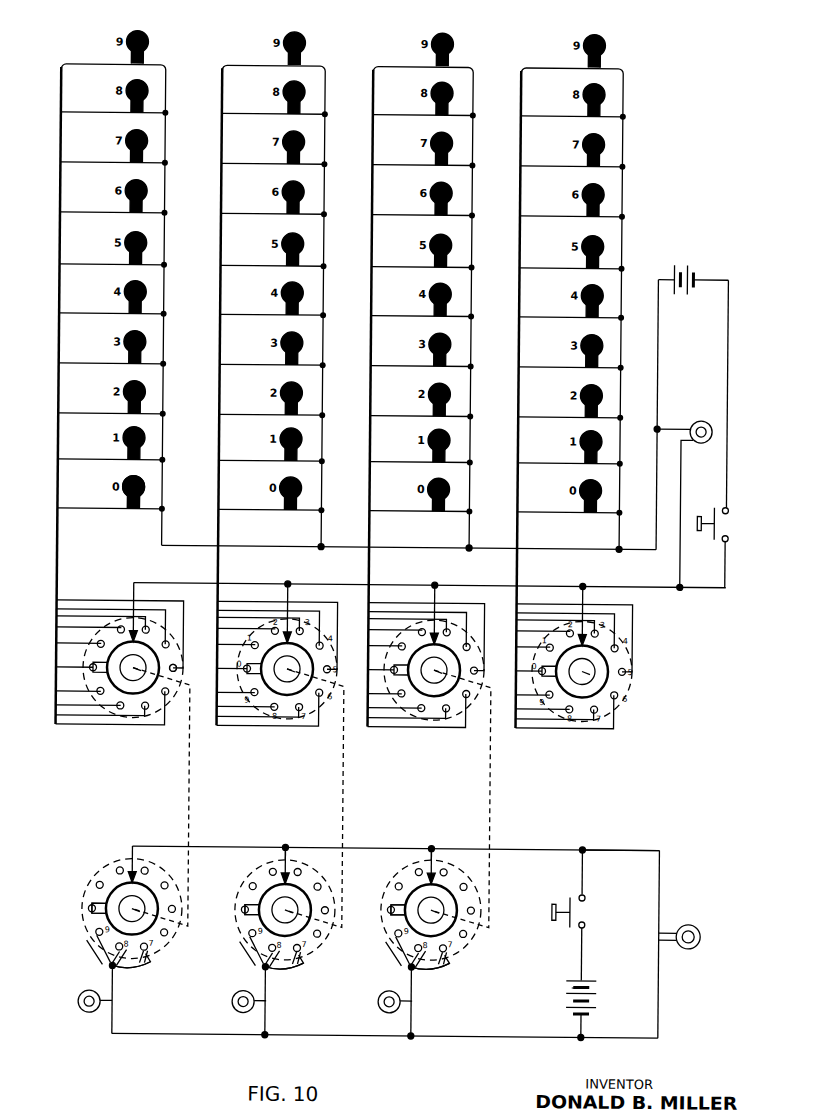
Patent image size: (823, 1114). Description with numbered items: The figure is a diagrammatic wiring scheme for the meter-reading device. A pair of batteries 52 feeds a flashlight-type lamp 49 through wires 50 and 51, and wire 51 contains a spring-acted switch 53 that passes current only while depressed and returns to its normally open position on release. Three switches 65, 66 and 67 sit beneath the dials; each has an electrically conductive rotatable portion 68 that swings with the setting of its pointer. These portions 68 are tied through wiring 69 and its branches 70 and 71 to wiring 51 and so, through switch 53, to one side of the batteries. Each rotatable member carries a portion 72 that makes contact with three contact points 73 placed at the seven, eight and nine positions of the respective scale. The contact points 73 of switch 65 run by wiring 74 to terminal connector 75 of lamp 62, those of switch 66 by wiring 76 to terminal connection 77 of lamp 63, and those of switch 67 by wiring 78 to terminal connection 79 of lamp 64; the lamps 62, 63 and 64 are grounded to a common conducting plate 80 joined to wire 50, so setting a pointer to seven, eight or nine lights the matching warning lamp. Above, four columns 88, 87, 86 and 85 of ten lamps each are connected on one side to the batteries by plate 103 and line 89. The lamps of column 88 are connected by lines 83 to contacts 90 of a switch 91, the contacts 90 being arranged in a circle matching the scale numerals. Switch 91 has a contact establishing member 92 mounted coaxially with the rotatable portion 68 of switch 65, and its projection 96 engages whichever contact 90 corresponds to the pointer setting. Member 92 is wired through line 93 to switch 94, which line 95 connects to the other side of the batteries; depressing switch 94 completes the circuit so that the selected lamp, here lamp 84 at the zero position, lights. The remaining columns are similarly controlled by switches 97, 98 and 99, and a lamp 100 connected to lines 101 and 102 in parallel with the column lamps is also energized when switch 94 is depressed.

The lamp 49 is at (703, 938).
The wire 50 is at (663, 982).
The wire 51 is at (628, 848).
The batteries 52 is at (682, 263).
The switch 53 is at (560, 908).
The lamp 62 is at (88, 1014).
The lamp 63 is at (242, 1013).
The lamp 64 is at (391, 1013).
The switch 65 is at (103, 897).
The switch 66 is at (291, 907).
The switch 67 is at (439, 907).
The rotatable portion 68 is at (116, 883).
The wiring 69 is at (386, 848).
The branch 70 is at (283, 848).
The branch 71 is at (436, 848).
The portion 72 is at (96, 911).
The contact points 73 is at (150, 964).
The wiring 74 is at (105, 964).
The terminal connector 75 is at (116, 985).
The wiring 76 is at (256, 964).
The terminal connection 77 is at (269, 987).
The wiring 78 is at (402, 963).
The terminal connection 79 is at (415, 987).
The electrical conducting plate 80 is at (363, 1037).
The lines 83 is at (56, 351).
The lamp 84 is at (133, 511).
The column 85 is at (571, 371).
The column 86 is at (422, 370).
The column 87 is at (273, 368).
The column 88 is at (92, 367).
The line 89 is at (655, 480).
The contacts 90 is at (103, 662).
The switch 91 is at (150, 667).
The contact establishing member 92 is at (193, 659).
The line 93 is at (247, 585).
The switch 94 is at (720, 543).
The line 95 is at (728, 406).
The projection 96 is at (119, 754).
The control switch 97 is at (280, 755).
The control switch 98 is at (429, 756).
The control switch 99 is at (594, 657).
The lamp 100 is at (700, 418).
The line 101 is at (684, 425).
The line 102 is at (682, 493).
The plate 103 is at (197, 548).